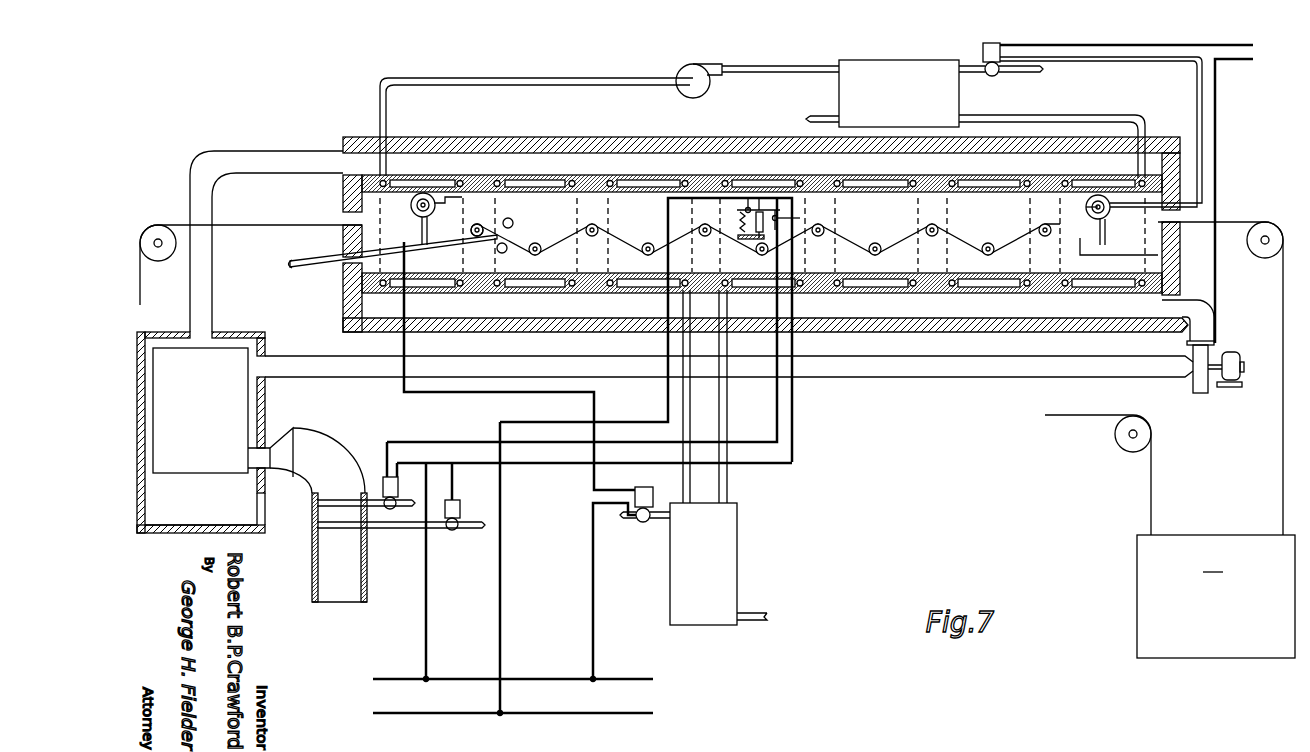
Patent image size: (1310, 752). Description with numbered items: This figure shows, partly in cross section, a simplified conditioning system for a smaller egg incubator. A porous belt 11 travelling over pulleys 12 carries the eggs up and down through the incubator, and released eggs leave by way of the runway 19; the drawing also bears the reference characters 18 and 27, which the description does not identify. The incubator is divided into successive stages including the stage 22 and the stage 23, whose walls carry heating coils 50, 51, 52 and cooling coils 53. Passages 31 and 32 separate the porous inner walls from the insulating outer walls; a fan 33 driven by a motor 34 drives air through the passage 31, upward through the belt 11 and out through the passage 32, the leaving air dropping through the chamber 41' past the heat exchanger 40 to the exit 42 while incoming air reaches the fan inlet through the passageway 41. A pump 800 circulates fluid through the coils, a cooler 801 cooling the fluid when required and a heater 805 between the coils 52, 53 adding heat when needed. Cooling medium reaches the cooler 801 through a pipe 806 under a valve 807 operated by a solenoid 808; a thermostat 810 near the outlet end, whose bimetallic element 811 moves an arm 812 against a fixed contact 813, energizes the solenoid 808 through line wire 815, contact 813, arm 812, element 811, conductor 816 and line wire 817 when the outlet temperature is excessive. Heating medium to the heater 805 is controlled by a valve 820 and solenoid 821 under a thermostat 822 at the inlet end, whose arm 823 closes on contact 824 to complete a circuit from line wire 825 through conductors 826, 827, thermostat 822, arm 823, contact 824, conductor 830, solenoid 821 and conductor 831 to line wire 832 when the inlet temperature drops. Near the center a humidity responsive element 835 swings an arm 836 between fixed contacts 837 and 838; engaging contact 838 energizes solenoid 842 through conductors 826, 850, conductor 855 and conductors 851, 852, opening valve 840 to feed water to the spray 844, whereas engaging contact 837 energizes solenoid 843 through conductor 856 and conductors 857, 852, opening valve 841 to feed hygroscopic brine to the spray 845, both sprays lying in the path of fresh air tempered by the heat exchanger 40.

The belt 11 is at (258, 222).
The pulley 12 is at (165, 257).
The guide roller 18 is at (520, 229).
The runway 19 is at (450, 258).
The stage 22 is at (628, 235).
The stage 23 is at (721, 259).
The cleaner 27 is at (1170, 440).
The passage 31 is at (868, 325).
The passage 32 is at (610, 150).
The fan 33 is at (1198, 390).
The motor 34 is at (1230, 388).
The heat exchanger 40 is at (201, 432).
The passageway 41 is at (729, 376).
The chamber 41' is at (197, 540).
The exit 42 is at (258, 510).
The heating coil 50 is at (430, 276).
The heating coil 51 is at (539, 276).
The heating coil 52 is at (645, 276).
The cooling coil 53 is at (767, 273).
The pump 800 is at (694, 64).
The cooler 801 is at (899, 62).
The heater 805 is at (725, 540).
The pipe 806 is at (970, 65).
The valve 807 is at (999, 76).
The solenoid 808 is at (1000, 40).
The thermostat 810 is at (1079, 210).
The bimetallic element 811 is at (1108, 208).
The arm 812 is at (1106, 240).
The fixed contact 813 is at (1090, 247).
The line wire 815 is at (1240, 62).
The conductor 816 is at (1140, 62).
The line wire 817 is at (1172, 45).
The valve 820 is at (643, 523).
The solenoid 821 is at (648, 488).
The thermostat 822 is at (410, 203).
The arm 823 is at (428, 236).
The contact 824 is at (414, 244).
The line wire 825 is at (550, 715).
The conductor 826 is at (502, 594).
The conductor 827 is at (586, 175).
The conductor 830 is at (468, 394).
The conductor 831 is at (596, 604).
The line wire 832 is at (634, 678).
The humidity responsive element 835 is at (738, 222).
The arm 836 is at (757, 190).
The fixed contact 837 is at (774, 194).
The fixed contact 838 is at (802, 214).
The valve 840 is at (394, 508).
The valve 841 is at (456, 533).
The solenoid 842 is at (398, 490).
The solenoid 843 is at (462, 510).
The spray 844 is at (350, 492).
The spray 845 is at (341, 530).
The conductor 850 is at (706, 175).
The conductor 851 is at (421, 464).
The conductor 852 is at (424, 584).
The conductor 855 is at (752, 442).
The conductor 856 is at (789, 464).
The conductor 857 is at (432, 466).